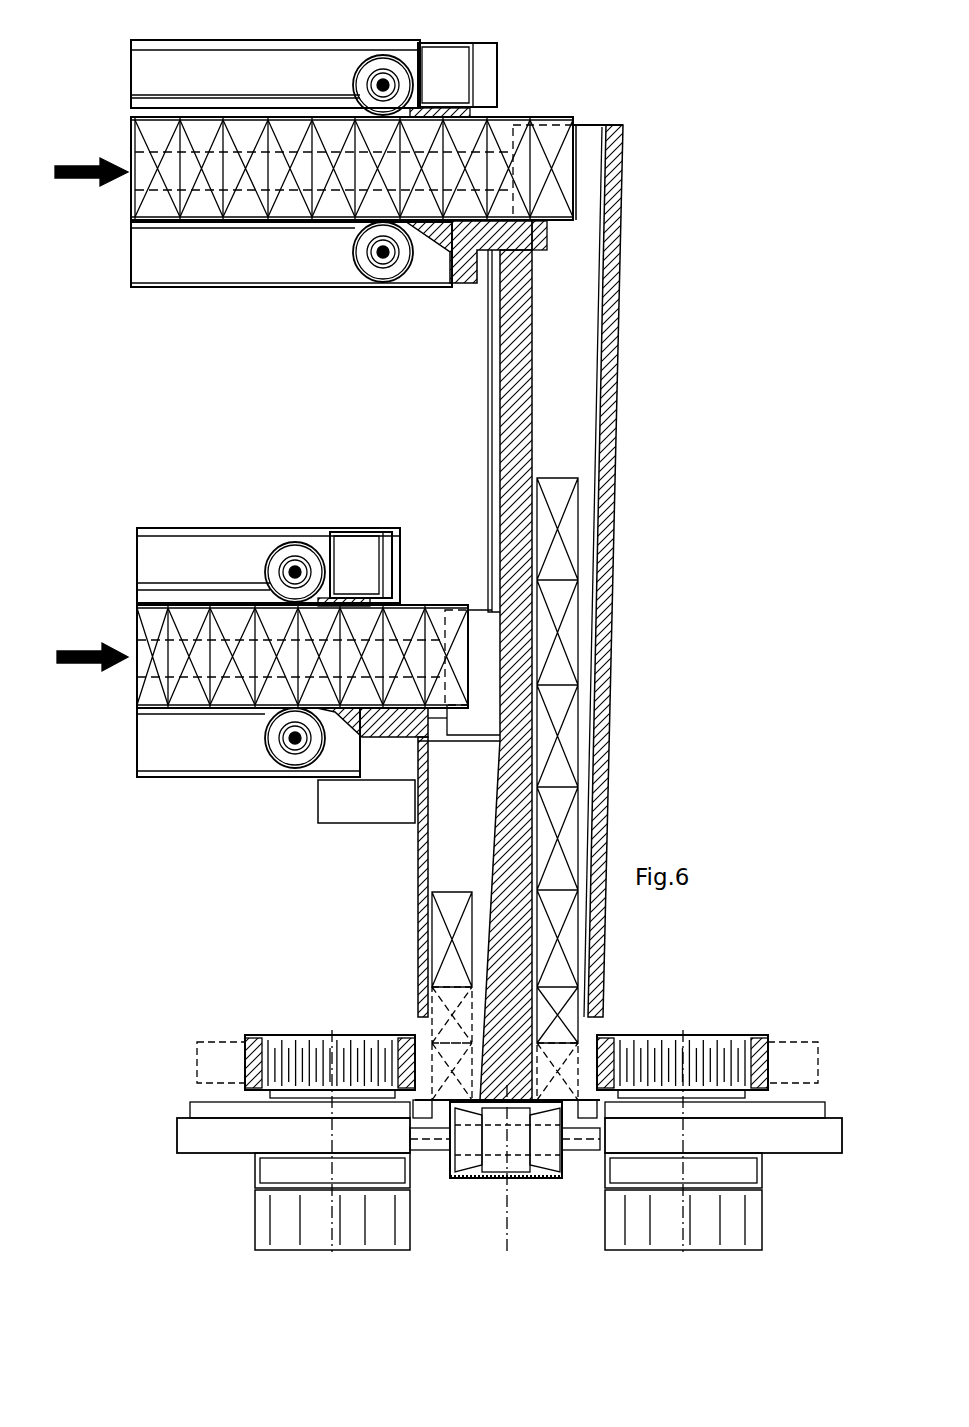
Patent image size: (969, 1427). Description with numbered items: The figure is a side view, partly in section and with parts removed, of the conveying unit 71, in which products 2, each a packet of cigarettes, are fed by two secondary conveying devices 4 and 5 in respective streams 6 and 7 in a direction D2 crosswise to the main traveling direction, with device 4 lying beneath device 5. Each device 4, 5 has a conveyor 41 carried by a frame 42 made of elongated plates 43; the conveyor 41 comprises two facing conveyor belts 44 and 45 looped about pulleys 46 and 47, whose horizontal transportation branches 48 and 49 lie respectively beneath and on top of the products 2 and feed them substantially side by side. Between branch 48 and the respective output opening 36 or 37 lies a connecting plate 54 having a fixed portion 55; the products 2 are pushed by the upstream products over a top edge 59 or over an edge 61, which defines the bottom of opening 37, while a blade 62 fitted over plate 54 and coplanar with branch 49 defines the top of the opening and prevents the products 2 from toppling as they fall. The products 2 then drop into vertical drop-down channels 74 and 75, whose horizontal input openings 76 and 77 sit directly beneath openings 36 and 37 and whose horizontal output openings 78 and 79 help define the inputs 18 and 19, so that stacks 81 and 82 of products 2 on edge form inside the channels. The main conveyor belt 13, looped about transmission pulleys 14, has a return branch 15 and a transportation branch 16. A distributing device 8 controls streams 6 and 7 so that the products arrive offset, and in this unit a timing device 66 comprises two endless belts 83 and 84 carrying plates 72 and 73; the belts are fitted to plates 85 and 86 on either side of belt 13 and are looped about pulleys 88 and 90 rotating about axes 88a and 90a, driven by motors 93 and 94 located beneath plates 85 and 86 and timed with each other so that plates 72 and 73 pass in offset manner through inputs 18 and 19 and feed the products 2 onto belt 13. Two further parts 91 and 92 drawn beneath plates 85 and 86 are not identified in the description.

The products 2 is at (158, 203).
The secondary conveying device 4 is at (108, 583).
The secondary conveying device 5 is at (118, 115).
The stream 6 is at (130, 623).
The stream 7 is at (130, 140).
The distributing device 8 is at (725, 1025).
The conveyor belt 13 is at (458, 1180).
The transmission pulleys 14 is at (517, 1150).
The return branch 15 is at (550, 1178).
The transportation branch 16 is at (492, 1170).
The input 18 is at (403, 1050).
The input 19 is at (604, 1050).
The output opening 36 is at (470, 708).
The output opening 37 is at (535, 220).
The conveyor 41 is at (122, 98).
The frame 42 is at (498, 48).
The elongated plates 43 is at (402, 52).
The conveyor belt 44 is at (128, 255).
The conveyor belt 45 is at (128, 74).
The pulleys 46 is at (388, 263).
The pulleys 47 is at (383, 78).
The transportation branch 48 is at (218, 225).
The transportation branch 49 is at (216, 115).
The connecting plate 54 is at (466, 290).
The fixed portion 55 is at (490, 300).
The top edge 59 is at (428, 740).
The edge 61 is at (538, 240).
The blade 62 is at (530, 120).
The timing device 66 is at (760, 1040).
The conveying unit 71 is at (652, 146).
The plates 72 is at (250, 1038).
The plates 73 is at (614, 1062).
The vertical dropdown channel 74 is at (420, 850).
The vertical dropdown channel 75 is at (600, 420).
The horizontal input opening 76 is at (470, 740).
The horizontal input opening 77 is at (607, 126).
The horizontal output opening 78 is at (420, 1030).
The horizontal output opening 79 is at (590, 1030).
The stack 81 is at (452, 890).
The stack 82 is at (565, 478).
The endless belt 83 is at (240, 1054).
The endless belt 84 is at (778, 1072).
The plate 85 is at (185, 1136).
The plate 86 is at (818, 1140).
The pulley 88 is at (300, 1050).
The axis 88a is at (335, 1138).
The pulley 90 is at (690, 1040).
The axis 90a is at (692, 1180).
The left coupling housing 91 is at (400, 1110).
The right coupling housing 92 is at (605, 1045).
The motor 93 is at (375, 1225).
The motor 94 is at (740, 1222).
The direction D2 is at (88, 175).